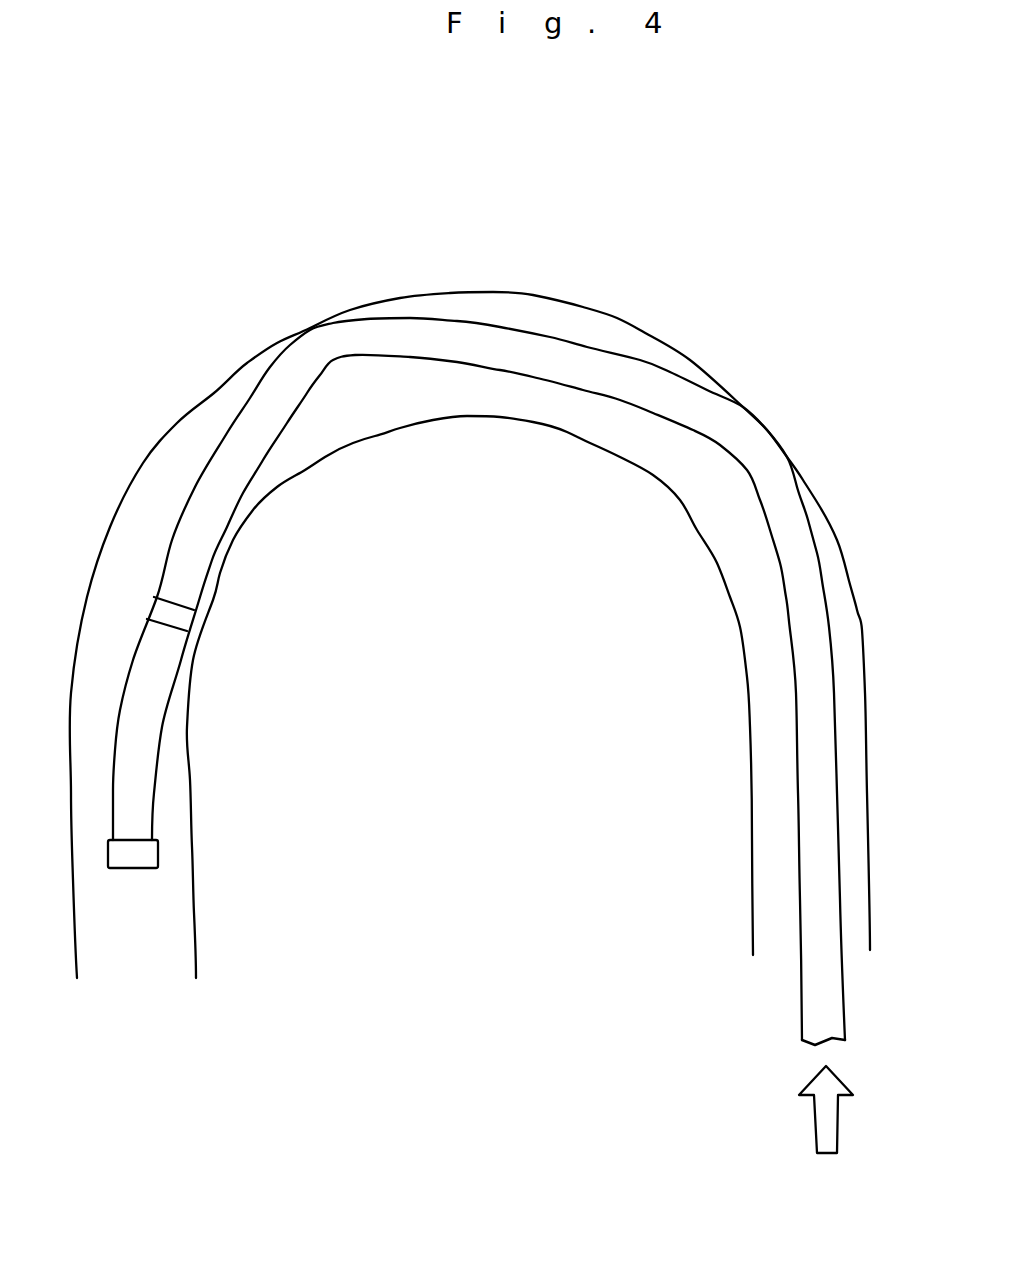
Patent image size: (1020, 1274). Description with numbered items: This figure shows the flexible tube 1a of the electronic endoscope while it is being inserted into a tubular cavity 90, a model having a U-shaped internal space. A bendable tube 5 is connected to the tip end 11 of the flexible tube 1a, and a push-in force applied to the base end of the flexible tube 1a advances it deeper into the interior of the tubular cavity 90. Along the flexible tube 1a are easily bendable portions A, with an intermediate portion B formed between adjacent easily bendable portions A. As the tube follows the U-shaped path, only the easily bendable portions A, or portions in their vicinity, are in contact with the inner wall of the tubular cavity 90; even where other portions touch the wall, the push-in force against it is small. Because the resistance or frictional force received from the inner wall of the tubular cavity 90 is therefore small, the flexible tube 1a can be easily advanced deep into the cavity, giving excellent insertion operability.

The tubular cavity 90 is at (493, 291).
The flexible tube 1a is at (670, 377).
The bendable tube 5 is at (135, 765).
The tip end 11 is at (183, 593).
The easily bendable portions A is at (323, 353).
The intermediate portion B is at (215, 492).